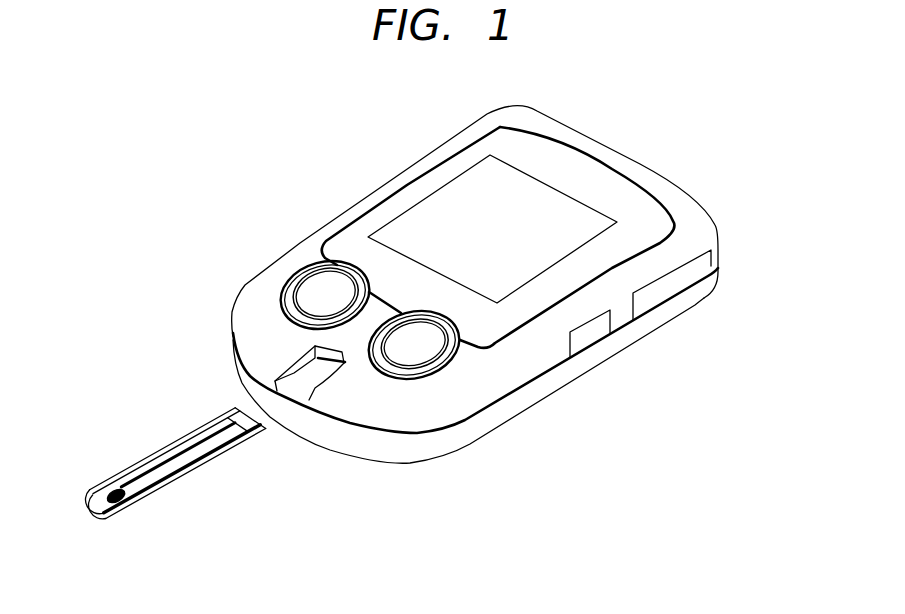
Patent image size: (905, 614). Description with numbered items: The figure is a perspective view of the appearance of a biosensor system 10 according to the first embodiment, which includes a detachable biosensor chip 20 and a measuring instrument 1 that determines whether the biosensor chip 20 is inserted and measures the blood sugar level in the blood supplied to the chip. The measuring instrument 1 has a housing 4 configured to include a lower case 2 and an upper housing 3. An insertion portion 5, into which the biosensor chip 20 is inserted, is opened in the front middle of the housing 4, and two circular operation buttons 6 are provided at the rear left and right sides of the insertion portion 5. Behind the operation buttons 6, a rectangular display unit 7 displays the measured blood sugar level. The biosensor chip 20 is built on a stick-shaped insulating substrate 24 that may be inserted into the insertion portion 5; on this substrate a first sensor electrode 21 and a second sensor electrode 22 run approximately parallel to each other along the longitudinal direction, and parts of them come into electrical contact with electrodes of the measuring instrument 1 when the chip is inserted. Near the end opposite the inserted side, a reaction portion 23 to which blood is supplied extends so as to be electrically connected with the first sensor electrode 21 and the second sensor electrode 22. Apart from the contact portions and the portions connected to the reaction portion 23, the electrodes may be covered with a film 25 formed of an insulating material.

The biosensor system 10 is at (221, 106).
The measuring instrument 1 is at (653, 167).
The lower case 2 is at (719, 284).
The upper housing 3 is at (719, 245).
The housing 4 is at (772, 247).
The insertion portion 5 is at (293, 387).
The operation buttons 6 is at (403, 358).
The display unit 7 is at (413, 227).
The biosensor chip 20 is at (186, 416).
The first sensor electrode 21 is at (153, 464).
The second sensor electrode 22 is at (167, 477).
The reaction portion 23 is at (104, 492).
The insulating substrate 24 is at (100, 516).
The film 25 is at (137, 462).